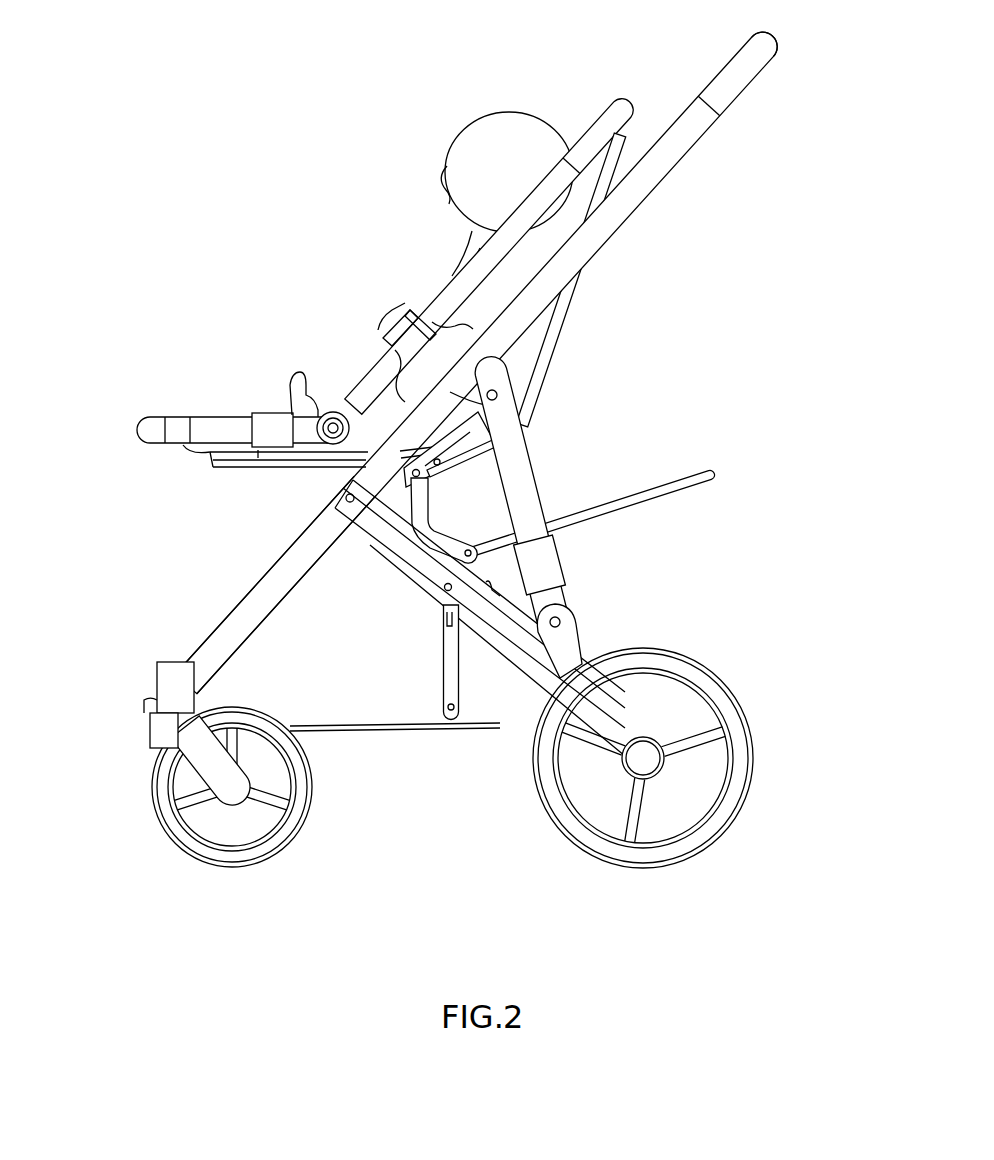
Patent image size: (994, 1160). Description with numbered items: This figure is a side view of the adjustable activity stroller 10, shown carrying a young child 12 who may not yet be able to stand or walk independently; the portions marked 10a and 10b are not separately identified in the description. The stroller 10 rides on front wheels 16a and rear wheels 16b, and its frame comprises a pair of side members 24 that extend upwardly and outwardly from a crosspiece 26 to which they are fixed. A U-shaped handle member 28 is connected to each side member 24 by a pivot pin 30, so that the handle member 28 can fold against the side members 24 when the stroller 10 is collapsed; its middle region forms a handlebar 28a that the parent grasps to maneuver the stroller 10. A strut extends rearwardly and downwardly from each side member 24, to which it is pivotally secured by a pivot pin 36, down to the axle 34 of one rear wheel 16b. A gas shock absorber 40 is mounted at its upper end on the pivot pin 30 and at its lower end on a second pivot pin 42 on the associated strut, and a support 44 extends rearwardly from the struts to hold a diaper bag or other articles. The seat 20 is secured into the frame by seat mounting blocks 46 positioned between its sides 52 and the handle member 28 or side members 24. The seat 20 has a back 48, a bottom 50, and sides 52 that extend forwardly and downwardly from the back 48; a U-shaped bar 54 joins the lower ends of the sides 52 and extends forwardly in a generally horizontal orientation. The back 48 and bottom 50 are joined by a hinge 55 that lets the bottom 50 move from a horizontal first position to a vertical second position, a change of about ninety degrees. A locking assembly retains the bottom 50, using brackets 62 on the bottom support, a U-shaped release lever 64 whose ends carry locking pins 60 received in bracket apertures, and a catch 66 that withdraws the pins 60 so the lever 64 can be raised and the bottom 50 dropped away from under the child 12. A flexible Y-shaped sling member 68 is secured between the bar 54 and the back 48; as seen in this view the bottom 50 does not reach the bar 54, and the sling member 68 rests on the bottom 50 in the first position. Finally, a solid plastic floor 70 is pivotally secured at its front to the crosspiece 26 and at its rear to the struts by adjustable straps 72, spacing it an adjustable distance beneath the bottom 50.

The adjustable activity stroller 10 is at (775, 326).
The front end of stroller 10a is at (123, 671).
The rear end of stroller 10b is at (833, 61).
The child 12 is at (442, 152).
The front wheels 16a is at (272, 850).
The rear wheels 16b is at (703, 850).
The seat 20 is at (593, 352).
The side members 24 is at (282, 583).
The crosspiece 26 is at (152, 700).
The handle member 28 is at (596, 250).
The handlebar 28a is at (774, 43).
The pivot pin 30 is at (500, 398).
The axle 34 is at (653, 758).
The pivot pin 36 is at (362, 507).
The gas shock absorber 40 is at (524, 490).
The second pivot pin 42 is at (563, 622).
The support 44 is at (700, 487).
The seat mounting blocks 46 is at (405, 333).
The back 48 is at (565, 218).
The bottom 50 is at (302, 468).
The sides 52 is at (490, 242).
The U-shaped bar 54 is at (153, 420).
The hinge 55 is at (455, 443).
The locking pin 60 is at (421, 476).
The brackets 62 is at (452, 461).
The release lever 64 is at (430, 513).
The catch 66 is at (558, 590).
The sling member 68 is at (190, 452).
The floor 70 is at (378, 732).
The adjustable straps 72 is at (452, 683).